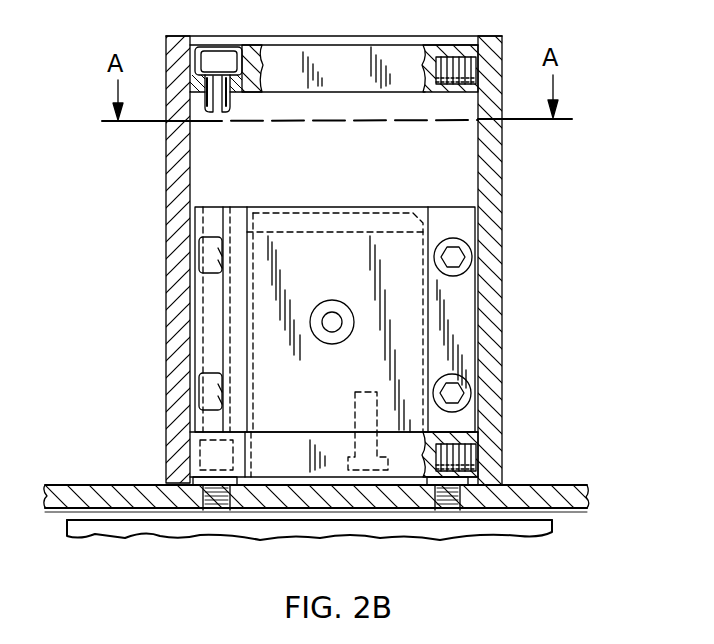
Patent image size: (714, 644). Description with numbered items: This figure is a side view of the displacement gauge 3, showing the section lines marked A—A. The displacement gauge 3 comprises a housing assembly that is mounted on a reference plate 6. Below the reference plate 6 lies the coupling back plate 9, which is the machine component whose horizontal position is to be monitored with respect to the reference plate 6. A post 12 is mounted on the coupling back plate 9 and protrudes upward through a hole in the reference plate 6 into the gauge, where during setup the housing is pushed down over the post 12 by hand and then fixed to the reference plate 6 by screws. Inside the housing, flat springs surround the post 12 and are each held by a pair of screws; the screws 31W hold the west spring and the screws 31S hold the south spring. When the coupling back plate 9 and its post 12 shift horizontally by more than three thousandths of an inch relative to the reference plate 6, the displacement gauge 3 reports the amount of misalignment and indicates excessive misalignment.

The displacement gauge 3 is at (552, 153).
The post 12 is at (285, 207).
The screws 31W is at (199, 255).
The screws 31S is at (471, 270).
The reference plate 6 is at (576, 485).
The coupling back plate 9 is at (552, 526).